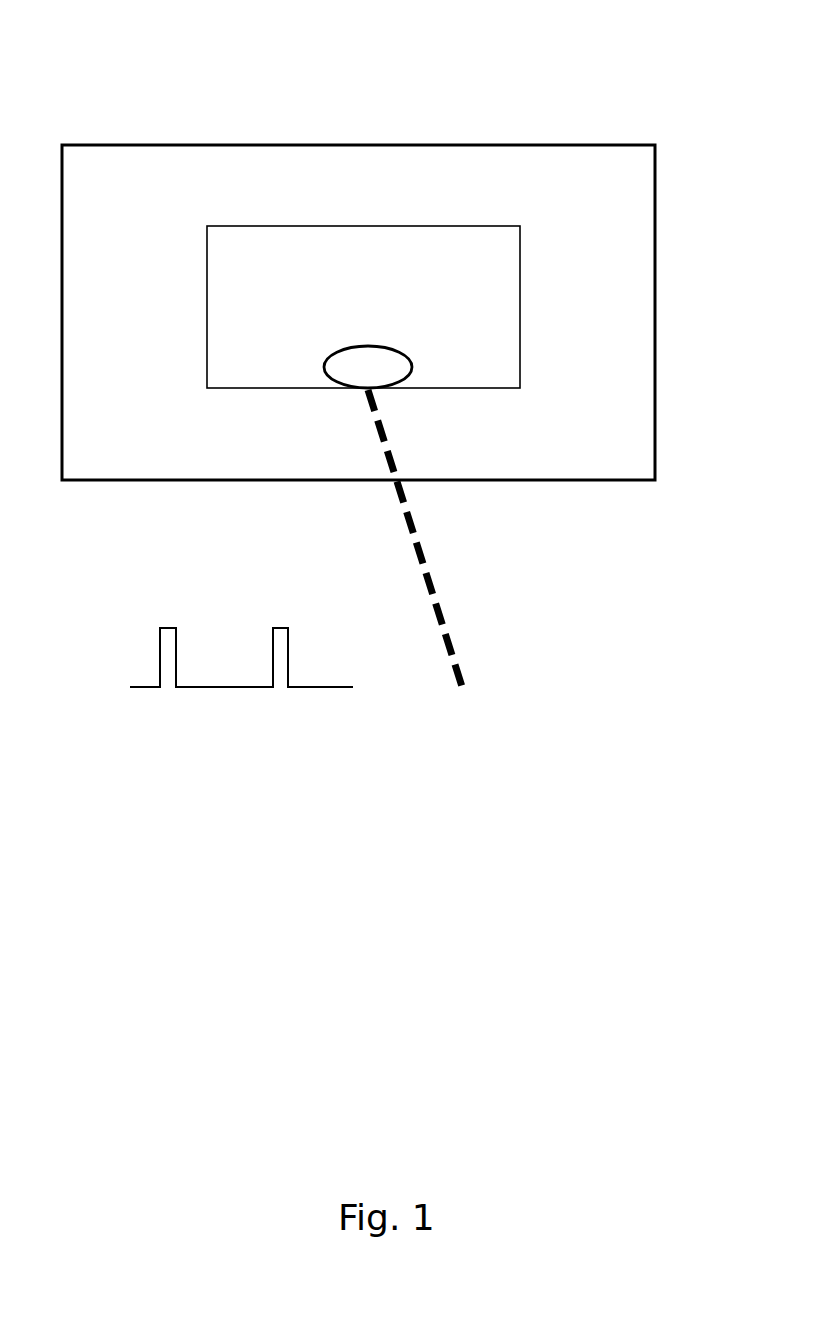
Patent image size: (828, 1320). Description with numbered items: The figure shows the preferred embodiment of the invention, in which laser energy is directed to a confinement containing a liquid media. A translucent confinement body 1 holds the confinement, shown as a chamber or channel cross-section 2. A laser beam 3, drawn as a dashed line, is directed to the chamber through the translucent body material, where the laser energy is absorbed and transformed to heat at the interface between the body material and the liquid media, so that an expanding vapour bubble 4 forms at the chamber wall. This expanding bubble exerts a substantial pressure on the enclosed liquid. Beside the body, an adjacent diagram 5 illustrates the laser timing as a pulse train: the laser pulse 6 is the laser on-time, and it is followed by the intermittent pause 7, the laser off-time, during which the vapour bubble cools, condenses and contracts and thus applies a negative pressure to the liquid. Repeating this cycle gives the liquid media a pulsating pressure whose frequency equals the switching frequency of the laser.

The confinement body 1 is at (541, 195).
The chamber cross-section 2 is at (283, 250).
The laser beam 3 is at (438, 612).
The vapour bubble 4 is at (387, 365).
The diagram 5 is at (226, 657).
The laser pulse 6 is at (167, 628).
The intermittent pause 7 is at (206, 685).